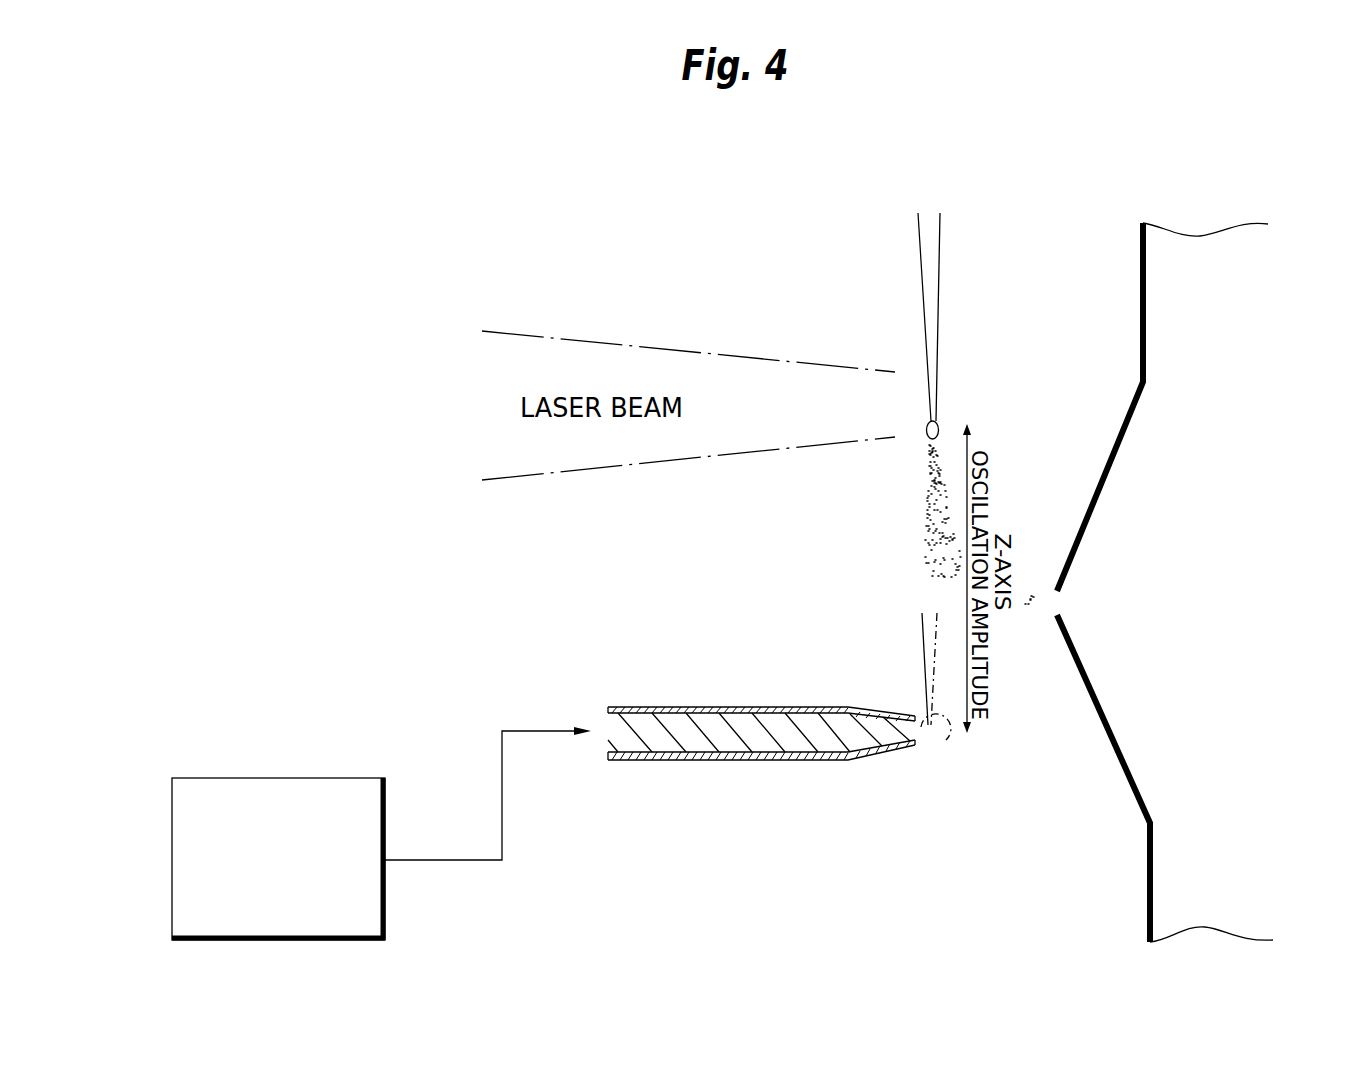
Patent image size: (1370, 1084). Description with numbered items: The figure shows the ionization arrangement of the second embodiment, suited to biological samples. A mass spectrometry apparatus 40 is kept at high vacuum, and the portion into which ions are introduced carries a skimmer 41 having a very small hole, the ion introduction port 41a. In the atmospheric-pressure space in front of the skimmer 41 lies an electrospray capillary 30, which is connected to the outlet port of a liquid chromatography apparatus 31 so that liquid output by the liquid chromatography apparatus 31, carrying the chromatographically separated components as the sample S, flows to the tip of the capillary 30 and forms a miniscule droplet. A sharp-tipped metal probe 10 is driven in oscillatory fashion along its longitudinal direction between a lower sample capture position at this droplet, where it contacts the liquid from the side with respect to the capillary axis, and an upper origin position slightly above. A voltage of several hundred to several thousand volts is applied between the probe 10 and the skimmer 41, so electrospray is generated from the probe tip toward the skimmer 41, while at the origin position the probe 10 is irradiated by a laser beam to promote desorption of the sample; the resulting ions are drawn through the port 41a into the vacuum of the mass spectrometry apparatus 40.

The metal probe 10 is at (932, 262).
The electrospray capillary 30 is at (761, 735).
The sample S is at (720, 725).
The liquid chromatography apparatus 31 is at (385, 895).
The mass spectrometry apparatus 40 is at (1194, 582).
The skimmer 41 is at (1148, 333).
The ion introduction port 41a is at (1058, 603).